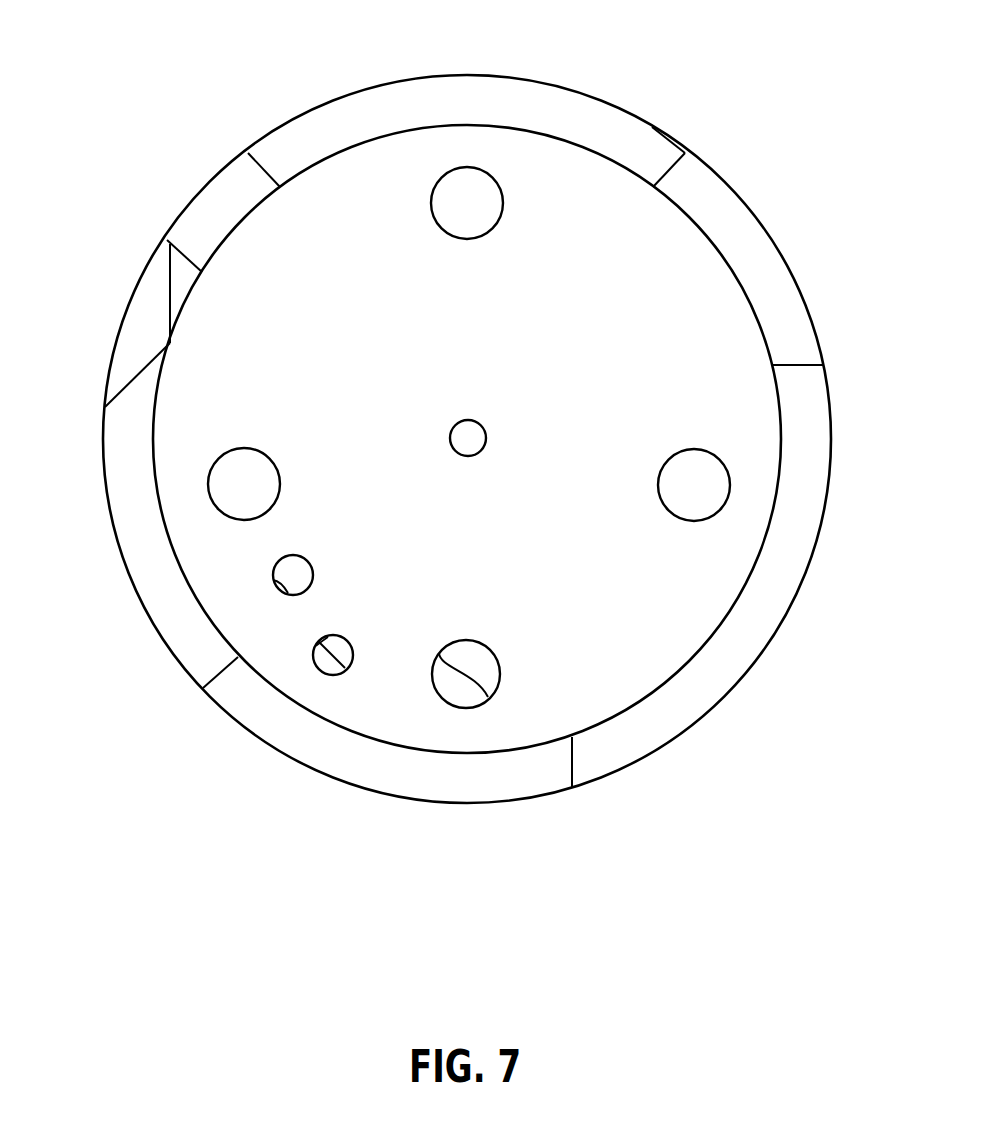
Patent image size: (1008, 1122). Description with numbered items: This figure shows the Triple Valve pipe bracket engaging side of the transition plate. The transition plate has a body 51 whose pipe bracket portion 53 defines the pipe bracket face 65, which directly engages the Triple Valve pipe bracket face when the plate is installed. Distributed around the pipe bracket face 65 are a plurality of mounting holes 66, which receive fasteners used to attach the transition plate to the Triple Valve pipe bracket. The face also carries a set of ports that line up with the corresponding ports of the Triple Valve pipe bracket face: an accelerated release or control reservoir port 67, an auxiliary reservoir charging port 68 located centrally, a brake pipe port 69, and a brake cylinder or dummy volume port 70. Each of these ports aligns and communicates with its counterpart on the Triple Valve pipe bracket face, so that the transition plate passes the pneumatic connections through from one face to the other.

The body 51 is at (345, 120).
The pipe bracket portion 53 is at (352, 713).
The pipe bracket face 65 is at (612, 621).
The mounting holes 66 is at (481, 170).
The accelerated release or control reservoir port 67 is at (275, 563).
The auxiliary reservoir charging port 68 is at (473, 418).
The brake pipe port 69 is at (323, 672).
The brake cylinder or dummy volume port 70 is at (443, 702).